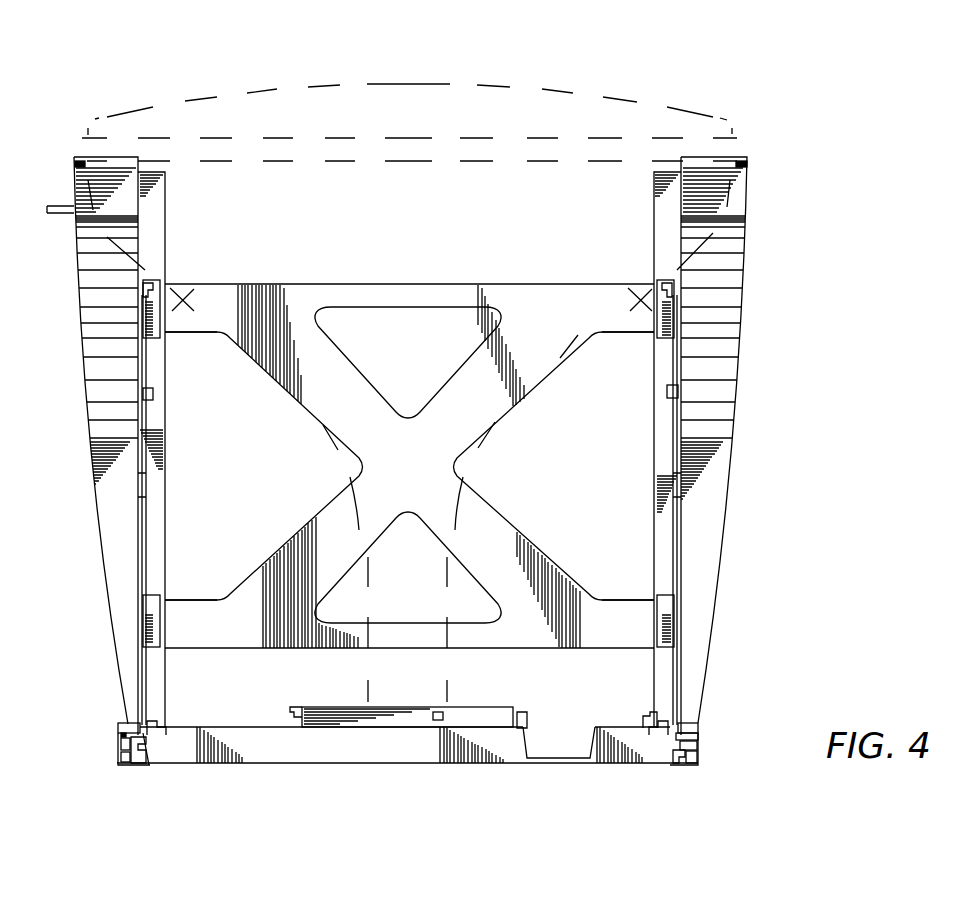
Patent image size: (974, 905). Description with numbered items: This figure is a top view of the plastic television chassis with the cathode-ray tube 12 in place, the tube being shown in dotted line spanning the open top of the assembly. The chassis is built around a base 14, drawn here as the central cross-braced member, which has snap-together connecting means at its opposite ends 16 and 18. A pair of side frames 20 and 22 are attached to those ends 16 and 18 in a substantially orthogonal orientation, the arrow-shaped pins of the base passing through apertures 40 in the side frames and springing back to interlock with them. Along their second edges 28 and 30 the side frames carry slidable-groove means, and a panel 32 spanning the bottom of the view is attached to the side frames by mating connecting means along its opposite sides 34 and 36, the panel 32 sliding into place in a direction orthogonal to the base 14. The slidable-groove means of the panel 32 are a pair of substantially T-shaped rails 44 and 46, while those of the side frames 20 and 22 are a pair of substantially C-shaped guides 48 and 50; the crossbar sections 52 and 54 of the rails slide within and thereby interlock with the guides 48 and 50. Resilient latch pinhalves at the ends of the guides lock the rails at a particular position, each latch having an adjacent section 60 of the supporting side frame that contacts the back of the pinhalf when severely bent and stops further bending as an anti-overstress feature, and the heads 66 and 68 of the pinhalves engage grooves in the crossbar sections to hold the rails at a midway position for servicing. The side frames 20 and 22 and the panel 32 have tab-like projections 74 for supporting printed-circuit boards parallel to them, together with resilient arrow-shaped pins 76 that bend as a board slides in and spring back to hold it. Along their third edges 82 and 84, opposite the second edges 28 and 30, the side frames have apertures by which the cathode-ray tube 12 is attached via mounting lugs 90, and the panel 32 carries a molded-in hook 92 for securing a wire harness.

The cathode-ray tube 12 is at (270, 85).
The base 14 is at (308, 525).
The end of base 16 is at (193, 333).
The end of base 18 is at (625, 333).
The side frame 20 is at (85, 348).
The side frame 22 is at (740, 281).
The second edge 28 is at (127, 767).
The second edge 30 is at (697, 764).
The panel 32 is at (438, 765).
The side of panel 34 is at (148, 764).
The side of panel 36 is at (670, 757).
The aperture 40 is at (168, 290).
The T-shaped rail 44 is at (118, 747).
The T-shaped rail 46 is at (698, 744).
The C-shaped guide 48 is at (120, 757).
The C-shaped guide 50 is at (698, 755).
The crossbar section 52 is at (130, 765).
The crossbar section 54 is at (685, 764).
The section of side frame 60 is at (130, 722).
The head of pinhalf 66 is at (120, 731).
The head of pinhalf 68 is at (698, 733).
The tab-like projection 74 is at (160, 307).
The resilient arrow-shaped pin 76 is at (525, 718).
The third edge 82 is at (82, 157).
The third edge 84 is at (742, 158).
The mounting lug 90 is at (75, 163).
The molded-in hook 92 is at (292, 708).